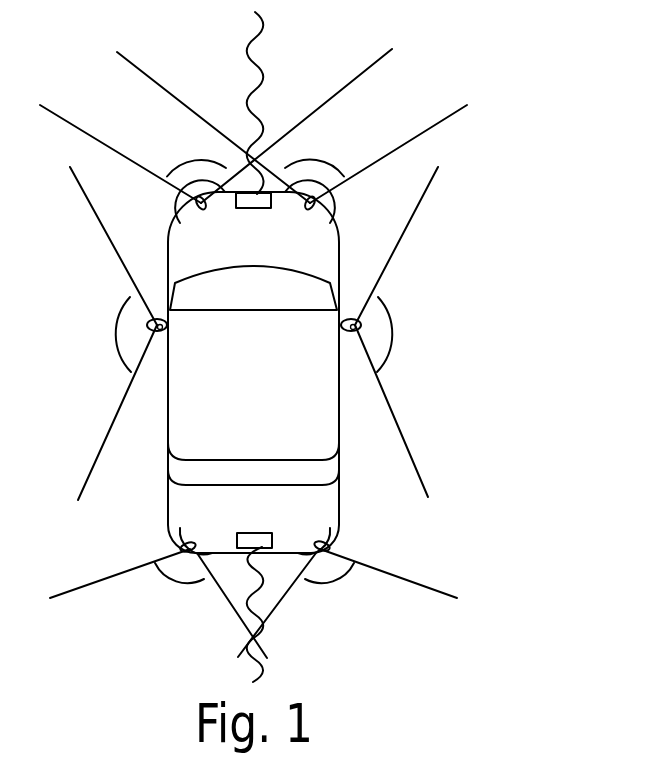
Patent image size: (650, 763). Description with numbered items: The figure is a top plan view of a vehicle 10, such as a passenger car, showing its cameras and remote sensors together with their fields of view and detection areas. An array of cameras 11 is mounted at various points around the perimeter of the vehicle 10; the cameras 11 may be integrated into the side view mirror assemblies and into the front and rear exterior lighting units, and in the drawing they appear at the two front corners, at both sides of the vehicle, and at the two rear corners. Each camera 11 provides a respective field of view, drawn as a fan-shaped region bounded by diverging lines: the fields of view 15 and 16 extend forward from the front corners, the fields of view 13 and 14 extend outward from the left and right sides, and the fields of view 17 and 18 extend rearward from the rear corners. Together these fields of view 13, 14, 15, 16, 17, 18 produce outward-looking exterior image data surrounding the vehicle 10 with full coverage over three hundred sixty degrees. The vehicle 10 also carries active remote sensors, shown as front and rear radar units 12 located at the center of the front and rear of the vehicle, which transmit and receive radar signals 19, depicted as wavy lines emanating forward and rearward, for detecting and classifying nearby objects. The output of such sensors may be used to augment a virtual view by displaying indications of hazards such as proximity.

The vehicle 10 is at (267, 399).
The cameras 11 is at (172, 225).
The radar units 12 is at (253, 210).
The field of view 13 is at (115, 338).
The field of view 14 is at (393, 327).
The field of view 15 is at (185, 163).
The field of view 16 is at (318, 162).
The field of view 17 is at (168, 580).
The field of view 18 is at (333, 577).
The radar signals 19 is at (265, 75).